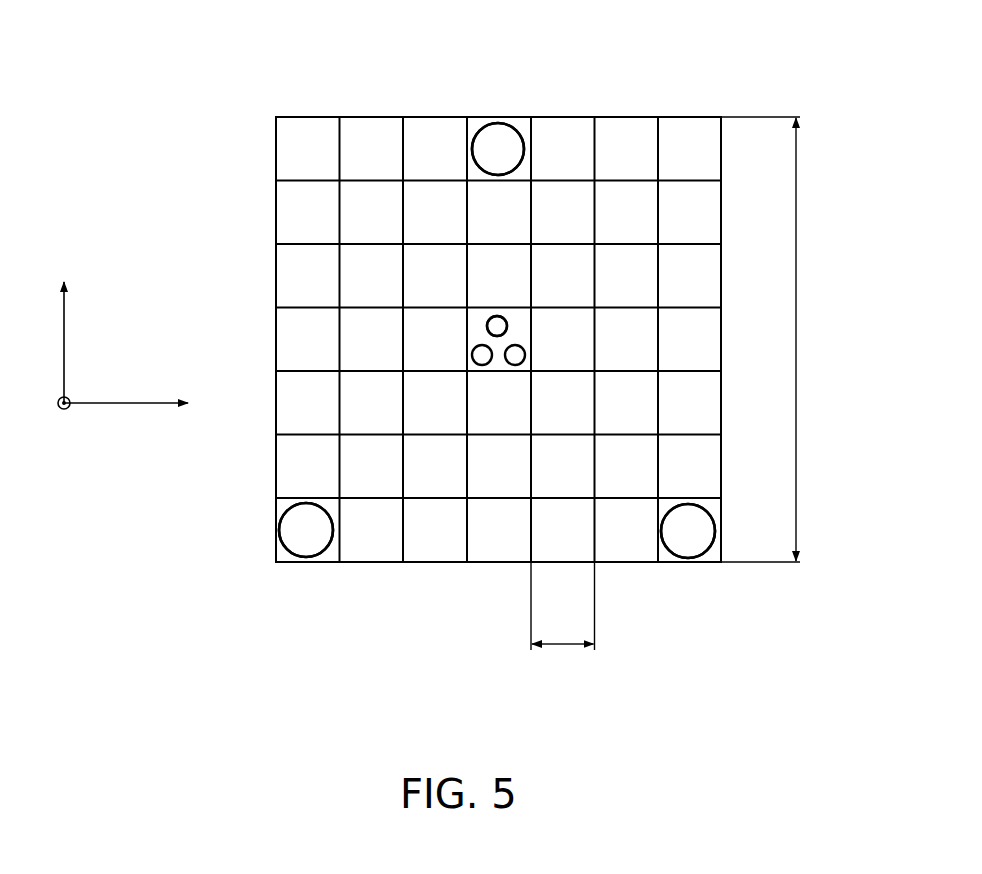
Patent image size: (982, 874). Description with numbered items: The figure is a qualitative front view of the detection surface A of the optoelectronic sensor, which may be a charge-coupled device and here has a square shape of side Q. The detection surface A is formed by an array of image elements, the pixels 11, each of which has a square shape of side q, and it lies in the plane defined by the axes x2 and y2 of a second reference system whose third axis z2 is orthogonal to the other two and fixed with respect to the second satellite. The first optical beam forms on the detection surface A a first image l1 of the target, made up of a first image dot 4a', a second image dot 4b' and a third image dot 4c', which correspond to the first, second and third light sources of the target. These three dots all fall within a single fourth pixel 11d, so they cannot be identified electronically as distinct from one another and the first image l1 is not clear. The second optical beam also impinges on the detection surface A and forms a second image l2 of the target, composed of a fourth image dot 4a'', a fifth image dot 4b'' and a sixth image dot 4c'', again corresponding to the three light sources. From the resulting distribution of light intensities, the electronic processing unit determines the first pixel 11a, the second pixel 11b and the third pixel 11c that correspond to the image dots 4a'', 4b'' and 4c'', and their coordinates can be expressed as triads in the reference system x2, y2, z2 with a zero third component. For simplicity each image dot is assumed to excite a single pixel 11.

The pixels 11 is at (372, 130).
The first pixel 11a is at (478, 124).
The second pixel 11b is at (282, 505).
The third pixel 11c is at (714, 507).
The fourth pixel 11d is at (476, 320).
The fourth image dot 4a'' is at (515, 111).
The fifth image dot 4b'' is at (316, 565).
The sixth image dot 4c'' is at (688, 572).
The first image dot 4a' is at (528, 294).
The second image dot 4b' is at (452, 342).
The third image dot 4c' is at (540, 379).
The first image l1 is at (522, 328).
The second image l2 is at (427, 531).
The detection surface A is at (665, 92).
The side of detection surface Q is at (770, 339).
The side of pixel q is at (563, 606).
The x2 axis x2 is at (137, 417).
The y2 axis y2 is at (54, 332).
The z2 axis z2 is at (57, 414).